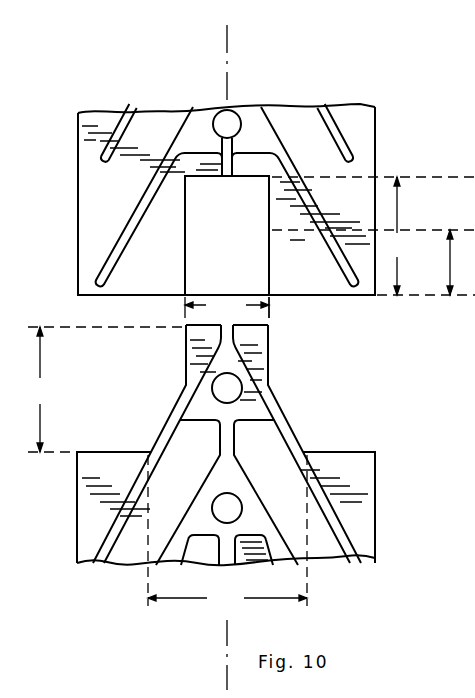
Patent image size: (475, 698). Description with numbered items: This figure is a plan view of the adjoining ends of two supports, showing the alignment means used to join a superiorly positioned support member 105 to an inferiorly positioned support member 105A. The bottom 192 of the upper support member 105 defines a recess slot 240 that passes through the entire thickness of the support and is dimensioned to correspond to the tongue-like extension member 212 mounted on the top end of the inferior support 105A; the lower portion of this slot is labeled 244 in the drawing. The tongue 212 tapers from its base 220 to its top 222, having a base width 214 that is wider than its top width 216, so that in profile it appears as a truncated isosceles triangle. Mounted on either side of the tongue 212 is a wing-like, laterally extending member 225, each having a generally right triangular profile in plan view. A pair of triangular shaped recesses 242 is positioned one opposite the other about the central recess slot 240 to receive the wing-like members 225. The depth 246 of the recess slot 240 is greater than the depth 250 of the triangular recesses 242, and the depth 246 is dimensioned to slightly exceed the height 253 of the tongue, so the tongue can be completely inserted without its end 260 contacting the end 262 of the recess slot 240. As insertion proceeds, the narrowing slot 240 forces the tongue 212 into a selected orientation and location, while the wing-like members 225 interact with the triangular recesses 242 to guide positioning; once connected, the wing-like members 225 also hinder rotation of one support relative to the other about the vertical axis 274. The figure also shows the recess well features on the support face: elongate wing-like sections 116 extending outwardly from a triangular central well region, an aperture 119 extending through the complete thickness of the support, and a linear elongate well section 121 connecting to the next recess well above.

The support member 105 is at (363, 124).
The inferior support member 105A is at (378, 492).
The wing-like sections 116 is at (128, 148).
The aperture 119 is at (238, 502).
The elongate well section 121 is at (223, 438).
The bottom 192 is at (351, 298).
The tongue-like extension member 212 is at (268, 350).
The base width 214 is at (227, 531).
The top width 216 is at (227, 306).
The base 220 is at (303, 446).
The top 222 is at (186, 327).
The wing-like member 225 is at (167, 420).
The recess slot 240 is at (208, 210).
The triangular shaped recesses 242 is at (170, 275).
The lower portion of insert block 244 is at (206, 265).
The depth of the recess slot 246 is at (373, 236).
The depth of the triangular shaped recess slots 250 is at (451, 264).
The height of the tongue member 253 is at (104, 389).
The end of the tongue 260 is at (294, 309).
The end of the recess slot 262 is at (253, 172).
The vertical axis 274 is at (228, 50).